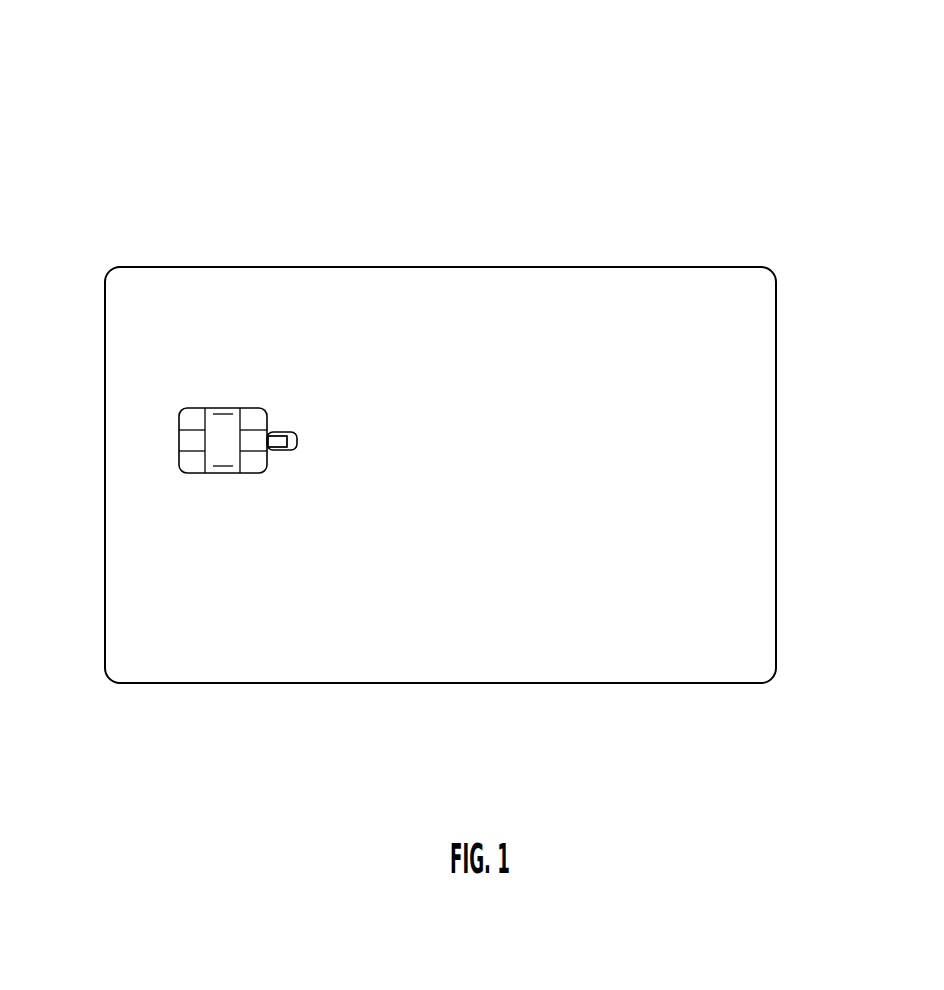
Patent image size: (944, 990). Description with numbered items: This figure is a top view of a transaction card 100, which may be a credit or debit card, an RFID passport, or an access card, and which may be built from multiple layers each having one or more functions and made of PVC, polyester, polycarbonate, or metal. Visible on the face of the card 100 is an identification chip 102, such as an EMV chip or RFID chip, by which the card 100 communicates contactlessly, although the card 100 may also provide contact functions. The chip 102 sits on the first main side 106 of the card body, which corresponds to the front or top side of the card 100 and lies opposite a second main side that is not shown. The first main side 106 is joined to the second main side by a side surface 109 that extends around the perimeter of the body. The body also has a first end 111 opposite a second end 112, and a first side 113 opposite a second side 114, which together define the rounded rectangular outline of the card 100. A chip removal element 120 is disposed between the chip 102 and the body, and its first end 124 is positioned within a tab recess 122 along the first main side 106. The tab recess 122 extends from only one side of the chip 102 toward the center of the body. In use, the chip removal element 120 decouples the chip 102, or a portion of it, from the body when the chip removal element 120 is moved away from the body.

The transaction card 100 is at (634, 114).
The identification chip 102 is at (217, 399).
The first main side 106 is at (401, 285).
The side surface 109 is at (706, 267).
The first end 111 is at (105, 455).
The second end 112 is at (776, 430).
The first side 113 is at (507, 268).
The second side 114 is at (507, 685).
The chip removal element 120 is at (280, 454).
The tab recess 122 is at (297, 437).
The first end of the CRE 124 is at (277, 434).